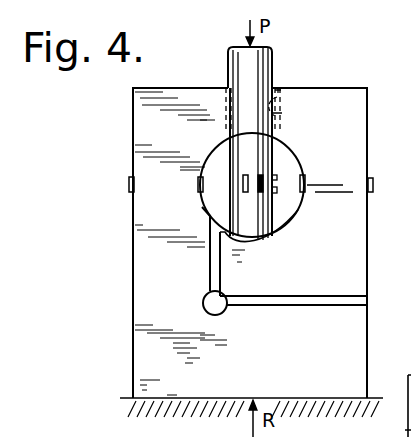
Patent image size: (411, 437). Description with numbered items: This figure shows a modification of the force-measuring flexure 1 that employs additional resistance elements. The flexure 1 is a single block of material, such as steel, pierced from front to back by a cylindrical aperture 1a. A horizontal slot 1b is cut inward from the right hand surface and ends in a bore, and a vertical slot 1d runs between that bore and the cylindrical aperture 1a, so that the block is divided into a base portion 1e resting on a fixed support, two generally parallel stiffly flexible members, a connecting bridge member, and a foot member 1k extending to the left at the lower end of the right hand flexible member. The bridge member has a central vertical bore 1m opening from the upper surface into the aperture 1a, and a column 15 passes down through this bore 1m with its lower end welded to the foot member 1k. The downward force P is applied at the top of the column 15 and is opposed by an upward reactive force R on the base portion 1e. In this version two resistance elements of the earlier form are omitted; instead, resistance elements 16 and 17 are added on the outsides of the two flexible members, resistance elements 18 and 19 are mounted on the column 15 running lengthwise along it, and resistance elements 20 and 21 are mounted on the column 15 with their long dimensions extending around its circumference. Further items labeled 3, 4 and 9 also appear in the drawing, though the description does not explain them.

The flexure 1 is at (358, 343).
The cylindrical aperture 1a is at (296, 212).
The horizontal slot 1b is at (360, 305).
The vertical slot 1d is at (212, 250).
The base portion 1e is at (278, 368).
The foot member 1k is at (275, 282).
The central vertical bore 1m is at (290, 88).
The strain gauge 3 is at (197, 183).
The strain gauge 4 is at (307, 183).
The support member 9 is at (404, 432).
The column 15 is at (272, 62).
The resistance element 16 is at (128, 182).
The resistance element 17 is at (374, 183).
The resistance element 18 is at (243, 181).
The resistance element 19 is at (263, 175).
The resistance element 20 is at (280, 177).
The resistance element 21 is at (280, 190).